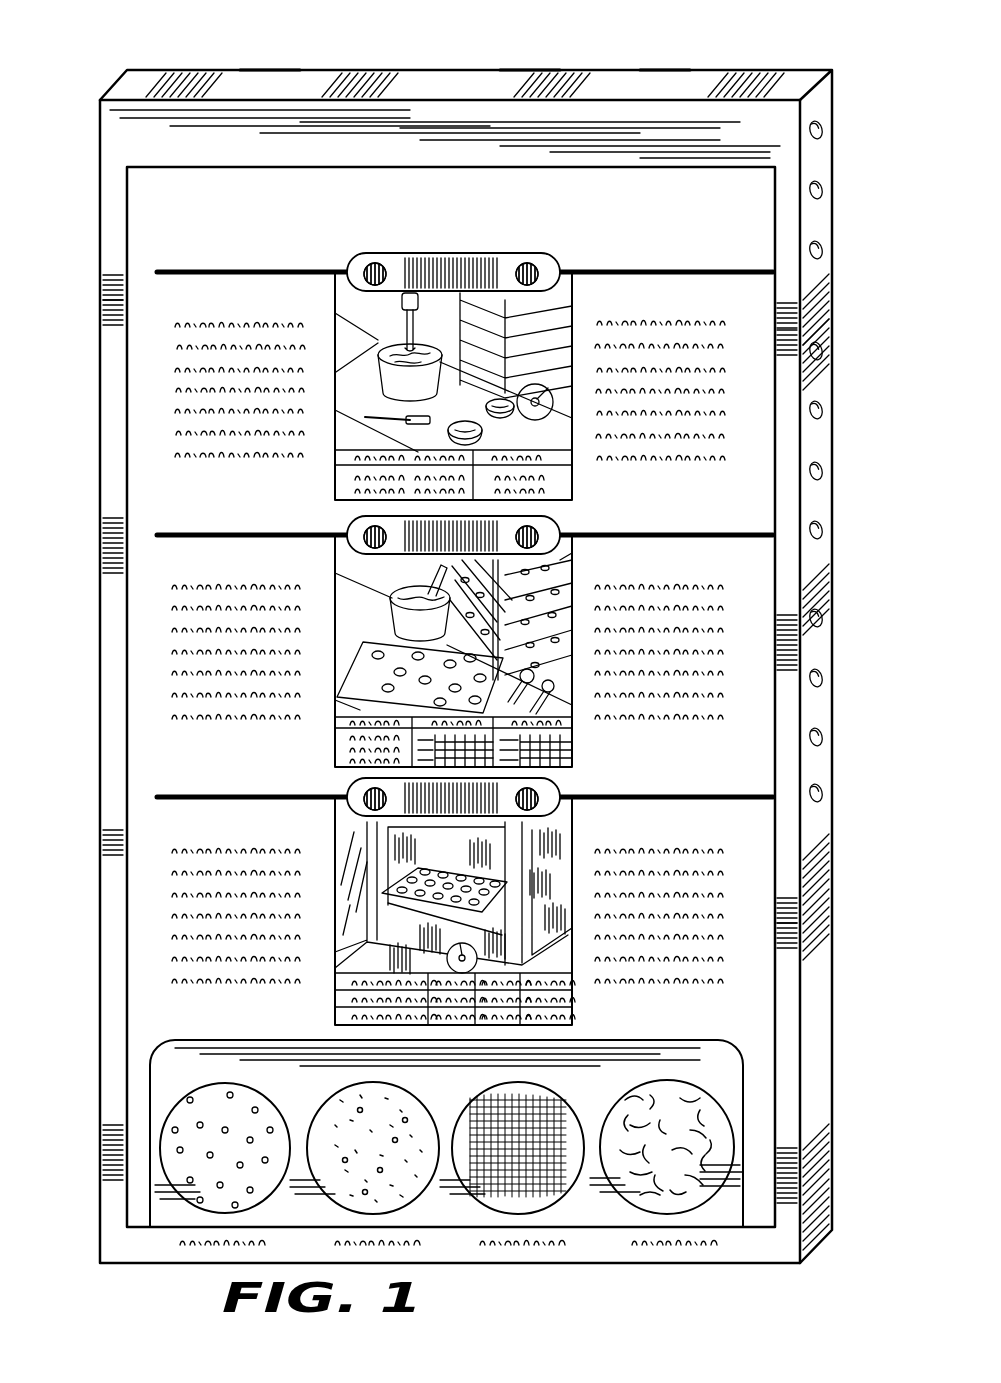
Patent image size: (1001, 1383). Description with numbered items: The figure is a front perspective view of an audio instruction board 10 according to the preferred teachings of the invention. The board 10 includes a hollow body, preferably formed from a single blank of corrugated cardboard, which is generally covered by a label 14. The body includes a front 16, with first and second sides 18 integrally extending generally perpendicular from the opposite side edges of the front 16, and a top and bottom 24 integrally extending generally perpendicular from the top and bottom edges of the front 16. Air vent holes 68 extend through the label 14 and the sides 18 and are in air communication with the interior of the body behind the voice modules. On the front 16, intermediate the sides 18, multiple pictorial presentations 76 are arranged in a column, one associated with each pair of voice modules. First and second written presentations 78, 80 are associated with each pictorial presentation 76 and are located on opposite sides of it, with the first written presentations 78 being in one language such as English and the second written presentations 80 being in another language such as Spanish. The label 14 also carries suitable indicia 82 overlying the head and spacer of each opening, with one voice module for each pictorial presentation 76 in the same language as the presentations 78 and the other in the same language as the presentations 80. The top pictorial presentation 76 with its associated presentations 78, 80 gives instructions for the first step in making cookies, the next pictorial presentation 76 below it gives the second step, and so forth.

The audio instruction board 10 is at (800, 66).
The label 14 is at (118, 212).
The front 16 is at (404, 110).
The sides 18 is at (808, 305).
The top and bottom 24 is at (522, 86).
The air vent holes 68 is at (821, 529).
The pictorial presentations 76 is at (470, 265).
The first written presentations 78 is at (175, 392).
The second written presentations 80 is at (705, 412).
The indicia 82 is at (363, 270).